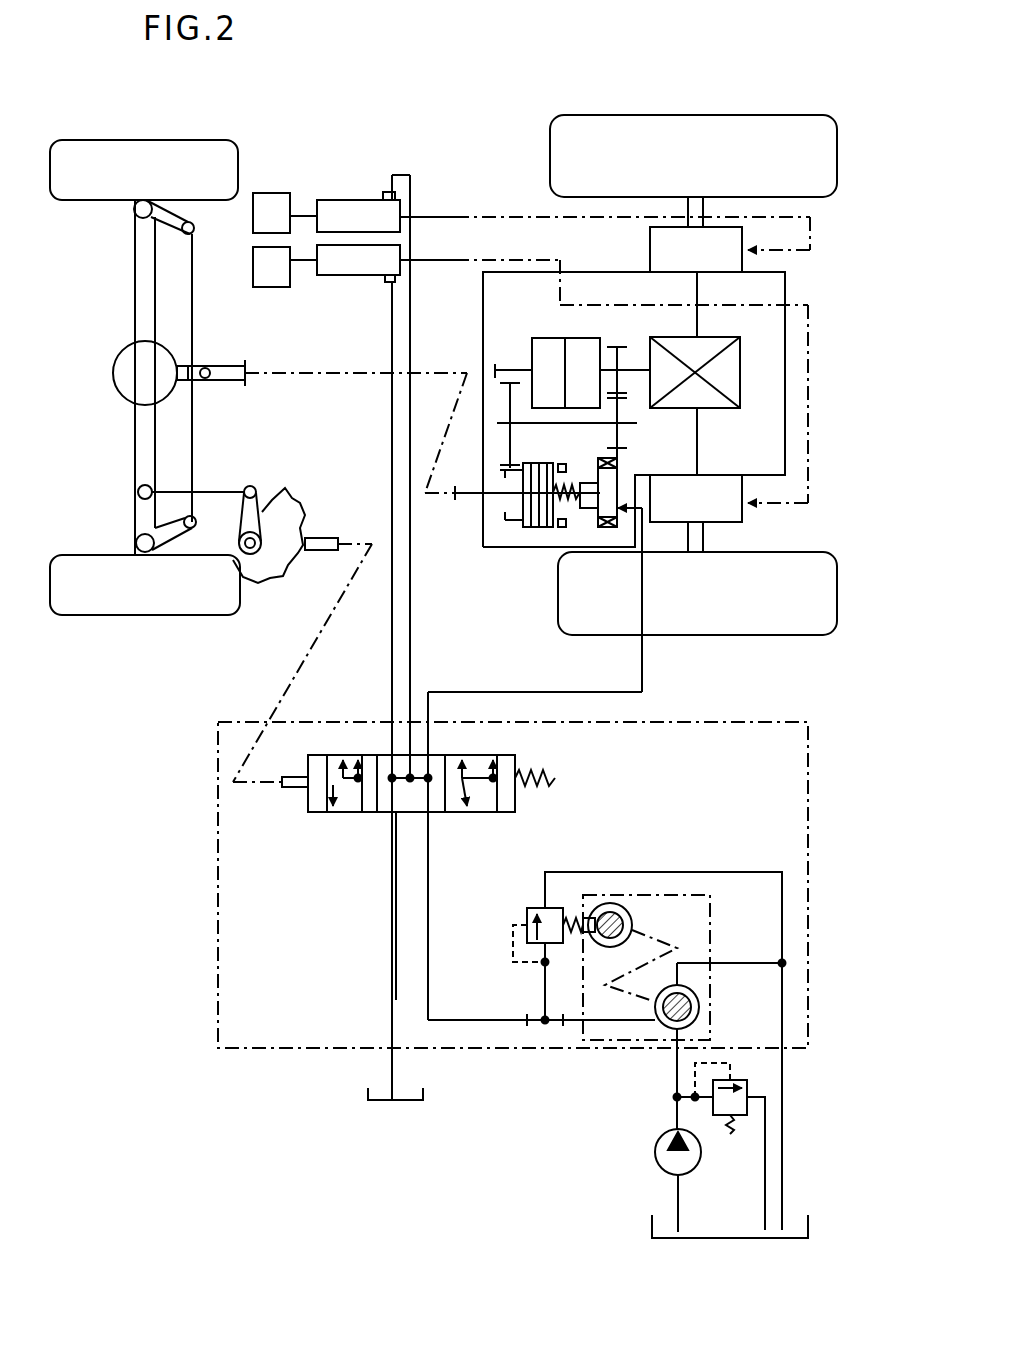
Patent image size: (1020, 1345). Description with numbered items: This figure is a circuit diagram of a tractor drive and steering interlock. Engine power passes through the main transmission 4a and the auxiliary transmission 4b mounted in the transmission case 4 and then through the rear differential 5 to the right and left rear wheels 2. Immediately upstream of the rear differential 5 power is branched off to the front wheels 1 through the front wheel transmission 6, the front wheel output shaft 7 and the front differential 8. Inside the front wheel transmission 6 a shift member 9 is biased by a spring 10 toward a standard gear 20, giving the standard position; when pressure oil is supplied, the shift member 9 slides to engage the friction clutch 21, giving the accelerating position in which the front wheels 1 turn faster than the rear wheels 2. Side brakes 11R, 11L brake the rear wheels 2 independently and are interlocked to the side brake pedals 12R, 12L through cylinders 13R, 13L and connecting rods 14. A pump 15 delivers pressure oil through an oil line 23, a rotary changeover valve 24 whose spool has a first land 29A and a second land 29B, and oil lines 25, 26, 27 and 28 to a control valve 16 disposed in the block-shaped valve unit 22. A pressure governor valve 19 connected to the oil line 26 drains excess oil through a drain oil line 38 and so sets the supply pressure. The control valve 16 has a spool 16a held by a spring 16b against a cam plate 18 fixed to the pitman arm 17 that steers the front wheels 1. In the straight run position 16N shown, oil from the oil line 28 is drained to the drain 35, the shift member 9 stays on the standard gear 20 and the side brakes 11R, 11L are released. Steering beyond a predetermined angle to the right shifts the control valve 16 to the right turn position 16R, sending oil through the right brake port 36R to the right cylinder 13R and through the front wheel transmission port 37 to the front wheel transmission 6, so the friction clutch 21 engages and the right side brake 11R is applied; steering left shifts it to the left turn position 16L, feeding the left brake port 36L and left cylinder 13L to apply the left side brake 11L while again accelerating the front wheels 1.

The front wheels 1 is at (199, 152).
The rear wheels 2 is at (717, 127).
The transmission case 4 is at (480, 343).
The main transmission 4a is at (535, 360).
The auxiliary transmission 4b is at (577, 340).
The rear differential 5 is at (738, 378).
The front wheel transmission 6 is at (608, 515).
The front wheel output shaft 7 is at (225, 368).
The front differential 8 is at (128, 368).
The shift member 9 is at (595, 482).
The spring 10 is at (564, 508).
The right side brake 11R is at (655, 250).
The left side brake 11L is at (742, 525).
The right side brake pedal 12R is at (277, 196).
The left side brake pedal 12L is at (283, 288).
The right cylinder 13R is at (358, 210).
The left cylinder 13L is at (353, 270).
The connecting rods 14 is at (470, 258).
The pump 15 is at (655, 1160).
The control valve 16 is at (456, 820).
The spool 16a is at (411, 783).
The spring 16b is at (557, 780).
The right turn position 16R is at (316, 815).
The straight run position 16N is at (396, 815).
The left turn position 16L is at (487, 815).
The pitman arm 17 is at (262, 518).
The cam plate 18 is at (297, 507).
The pressure governor valve 19 is at (527, 927).
The standard gear 20 is at (620, 474).
The friction clutch 21 is at (535, 528).
The valve unit 22 is at (272, 1050).
The oil line 23 is at (675, 1045).
The changeover valve 24 is at (720, 940).
The oil line 25 is at (580, 1040).
The oil line 26 is at (540, 1045).
The oil line 27 is at (465, 1045).
The oil line 28 is at (430, 964).
The first land 29A is at (700, 1004).
The second land 29B is at (614, 903).
The drain 35 is at (392, 1014).
The right brake port 36R is at (394, 737).
The left brake port 36L is at (391, 746).
The front wheel transmission port 37 is at (412, 737).
The drain oil line 38 is at (711, 872).